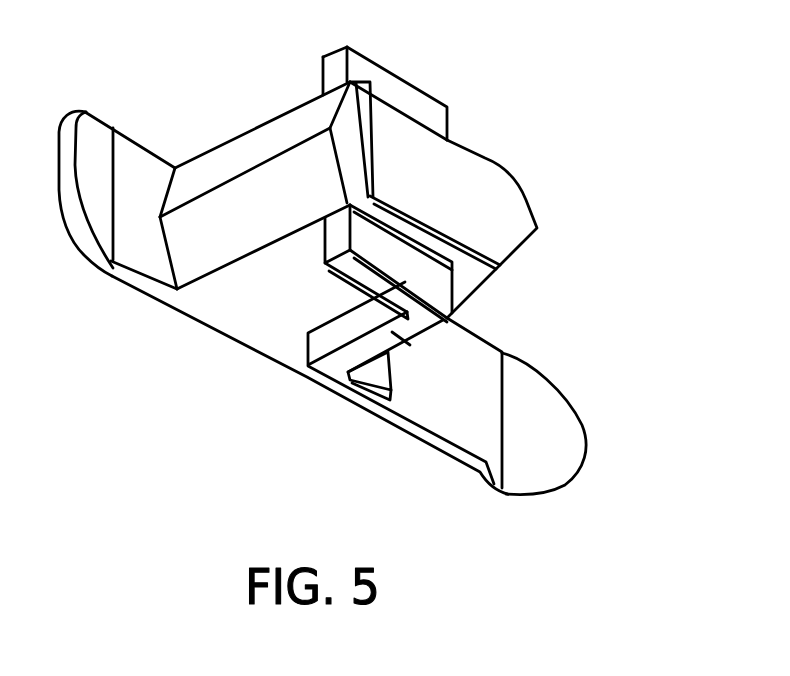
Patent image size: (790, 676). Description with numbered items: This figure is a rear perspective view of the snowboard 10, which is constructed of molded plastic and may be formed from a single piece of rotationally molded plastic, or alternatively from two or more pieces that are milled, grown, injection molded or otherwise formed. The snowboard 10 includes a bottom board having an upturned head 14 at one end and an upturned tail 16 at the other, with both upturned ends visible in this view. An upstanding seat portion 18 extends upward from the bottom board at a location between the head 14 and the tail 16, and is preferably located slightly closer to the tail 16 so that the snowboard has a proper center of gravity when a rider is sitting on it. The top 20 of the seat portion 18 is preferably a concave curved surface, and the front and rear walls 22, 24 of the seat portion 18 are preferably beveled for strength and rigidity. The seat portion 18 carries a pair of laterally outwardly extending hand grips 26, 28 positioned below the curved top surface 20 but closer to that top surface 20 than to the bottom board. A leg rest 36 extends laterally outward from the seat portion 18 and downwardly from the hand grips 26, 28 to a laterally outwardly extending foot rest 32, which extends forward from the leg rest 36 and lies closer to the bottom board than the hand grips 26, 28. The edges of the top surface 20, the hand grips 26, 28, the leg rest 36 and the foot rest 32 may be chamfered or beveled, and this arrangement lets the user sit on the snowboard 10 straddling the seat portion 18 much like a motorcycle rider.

The snowboard 10 is at (606, 185).
The upturned head 14 is at (568, 437).
The upturned tail 16 is at (97, 135).
The seat portion 18 is at (254, 150).
The top surface of seat portion 20 is at (463, 183).
The front wall 22 is at (480, 292).
The rear wall 24 is at (217, 243).
The hand grip 26 is at (397, 78).
The hand grip 28 is at (357, 272).
The foot rest 32 is at (370, 394).
The leg rest 36 is at (395, 334).